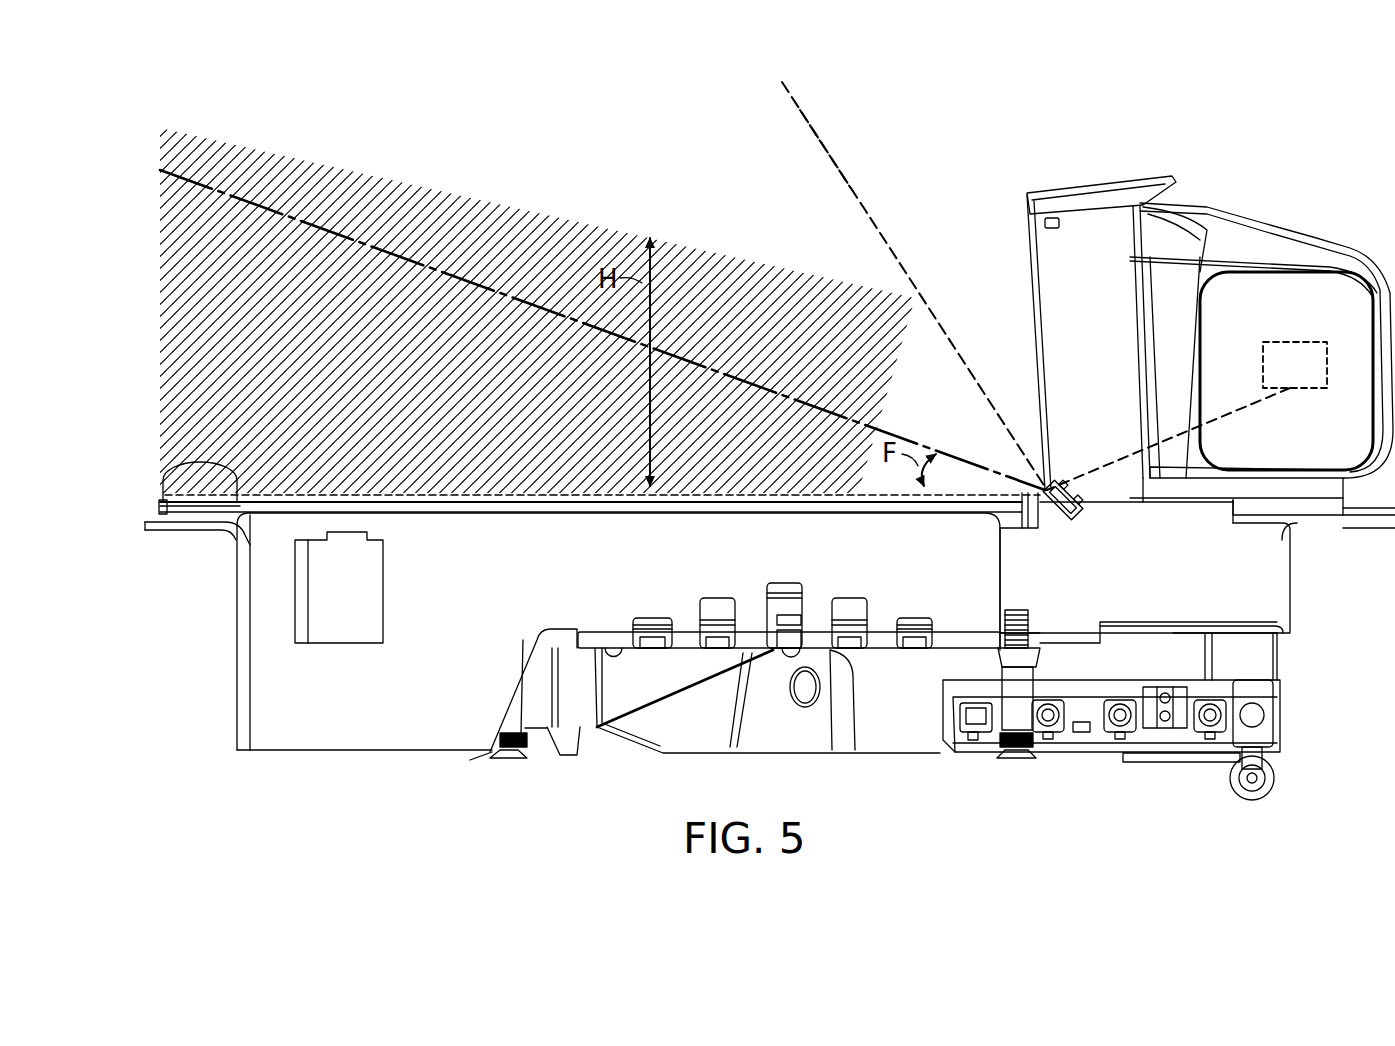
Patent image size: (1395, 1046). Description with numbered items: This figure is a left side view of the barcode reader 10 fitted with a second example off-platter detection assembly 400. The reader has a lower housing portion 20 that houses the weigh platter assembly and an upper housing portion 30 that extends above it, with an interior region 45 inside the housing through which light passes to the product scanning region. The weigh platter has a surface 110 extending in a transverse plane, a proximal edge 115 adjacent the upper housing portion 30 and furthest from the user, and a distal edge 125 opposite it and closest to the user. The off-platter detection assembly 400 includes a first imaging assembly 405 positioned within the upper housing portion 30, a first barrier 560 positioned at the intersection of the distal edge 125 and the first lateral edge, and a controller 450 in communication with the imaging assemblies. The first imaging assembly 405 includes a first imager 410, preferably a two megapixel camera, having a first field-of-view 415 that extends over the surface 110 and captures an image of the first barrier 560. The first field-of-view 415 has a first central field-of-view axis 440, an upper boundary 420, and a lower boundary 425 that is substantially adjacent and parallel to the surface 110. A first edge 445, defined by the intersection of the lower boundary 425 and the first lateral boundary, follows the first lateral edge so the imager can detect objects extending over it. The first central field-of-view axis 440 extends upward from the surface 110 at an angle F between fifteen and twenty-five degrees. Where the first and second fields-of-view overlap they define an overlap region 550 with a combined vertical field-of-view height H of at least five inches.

The barcode reader 10 is at (970, 108).
The lower housing portion 20 is at (222, 645).
The upper housing portion 30 is at (1210, 312).
The interior region 45 is at (1240, 613).
The surface 110 is at (380, 500).
The proximal edge 115 is at (1039, 524).
The distal edge 125 is at (158, 507).
The off-platter detection assembly 400 is at (1168, 512).
The first imaging assembly 405 is at (1088, 516).
The first imager 410 is at (1071, 484).
The first field-of-view 415 is at (798, 172).
The upper boundary 420 is at (856, 182).
The lower boundary 425 is at (470, 494).
The first central field-of-view axis 440 is at (702, 356).
The first edge 445 is at (288, 488).
The controller 450 is at (1290, 341).
The overlap region 550 is at (254, 132).
The first barrier 560 is at (182, 485).